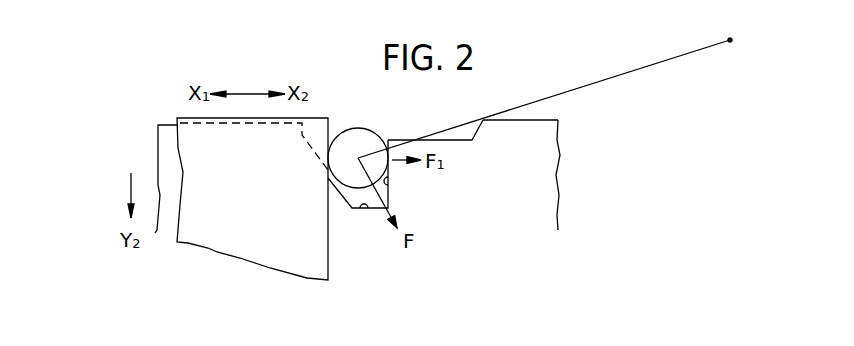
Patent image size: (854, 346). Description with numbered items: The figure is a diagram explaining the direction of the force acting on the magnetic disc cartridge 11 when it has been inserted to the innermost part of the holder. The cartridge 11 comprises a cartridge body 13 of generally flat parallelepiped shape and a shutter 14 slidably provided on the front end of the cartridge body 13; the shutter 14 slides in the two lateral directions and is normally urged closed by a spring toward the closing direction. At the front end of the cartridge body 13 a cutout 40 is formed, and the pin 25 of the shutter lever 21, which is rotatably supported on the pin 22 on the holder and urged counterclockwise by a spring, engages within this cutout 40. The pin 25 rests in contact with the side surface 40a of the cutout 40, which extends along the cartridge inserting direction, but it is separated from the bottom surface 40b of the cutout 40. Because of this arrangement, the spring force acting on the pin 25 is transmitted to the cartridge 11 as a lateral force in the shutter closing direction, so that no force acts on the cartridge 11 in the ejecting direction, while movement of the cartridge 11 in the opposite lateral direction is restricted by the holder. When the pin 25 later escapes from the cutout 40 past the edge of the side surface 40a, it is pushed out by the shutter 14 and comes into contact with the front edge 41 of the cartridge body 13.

The magnetic disc cartridge 11 is at (497, 158).
The cartridge body 13 is at (558, 155).
The shutter 14 is at (253, 252).
The shutter lever 21 is at (608, 78).
The pin 22 is at (732, 45).
The pin 25 is at (362, 133).
The cutout 40 is at (374, 202).
The side surface 40a is at (390, 192).
The bottom surface 40b is at (367, 212).
The front edge 41 is at (405, 140).